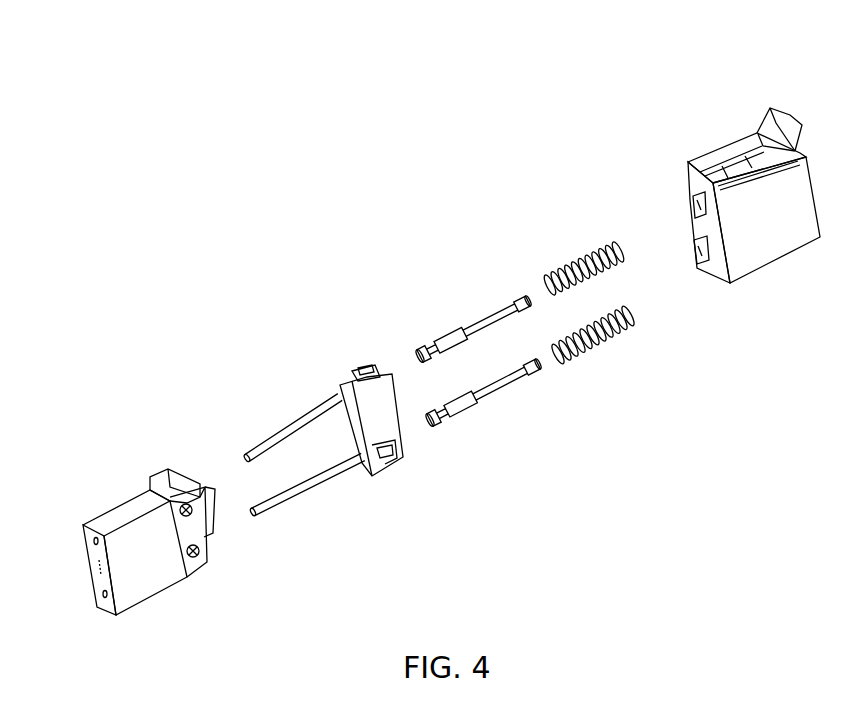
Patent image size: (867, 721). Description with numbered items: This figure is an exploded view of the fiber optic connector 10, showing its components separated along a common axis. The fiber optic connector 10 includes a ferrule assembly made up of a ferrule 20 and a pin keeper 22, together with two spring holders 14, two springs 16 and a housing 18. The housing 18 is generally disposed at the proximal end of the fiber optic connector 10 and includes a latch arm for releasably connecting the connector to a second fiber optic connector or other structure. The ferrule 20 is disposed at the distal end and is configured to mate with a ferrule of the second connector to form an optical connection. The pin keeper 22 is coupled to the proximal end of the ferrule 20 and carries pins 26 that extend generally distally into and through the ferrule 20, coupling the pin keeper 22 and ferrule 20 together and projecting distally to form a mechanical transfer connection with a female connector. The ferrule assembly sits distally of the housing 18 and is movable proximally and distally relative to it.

The fiber optic connector 10 is at (315, 247).
The spring holder 14 is at (473, 318).
The spring 16 is at (565, 255).
The housing 18 is at (715, 130).
The ferrule 20 is at (120, 490).
The pin keeper 22 is at (305, 405).
The pin 26 is at (333, 470).